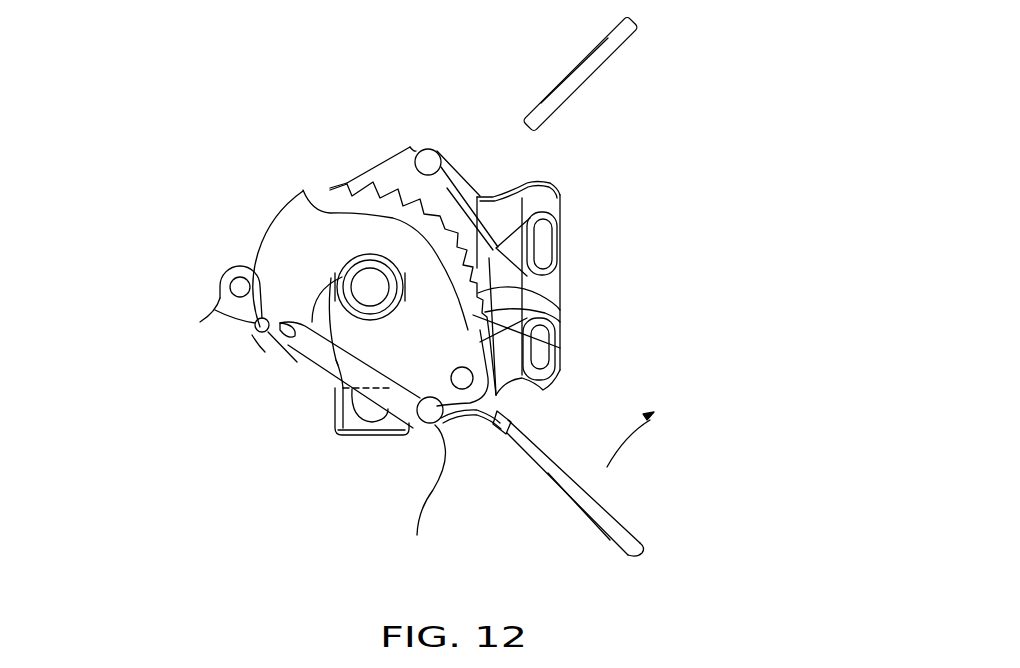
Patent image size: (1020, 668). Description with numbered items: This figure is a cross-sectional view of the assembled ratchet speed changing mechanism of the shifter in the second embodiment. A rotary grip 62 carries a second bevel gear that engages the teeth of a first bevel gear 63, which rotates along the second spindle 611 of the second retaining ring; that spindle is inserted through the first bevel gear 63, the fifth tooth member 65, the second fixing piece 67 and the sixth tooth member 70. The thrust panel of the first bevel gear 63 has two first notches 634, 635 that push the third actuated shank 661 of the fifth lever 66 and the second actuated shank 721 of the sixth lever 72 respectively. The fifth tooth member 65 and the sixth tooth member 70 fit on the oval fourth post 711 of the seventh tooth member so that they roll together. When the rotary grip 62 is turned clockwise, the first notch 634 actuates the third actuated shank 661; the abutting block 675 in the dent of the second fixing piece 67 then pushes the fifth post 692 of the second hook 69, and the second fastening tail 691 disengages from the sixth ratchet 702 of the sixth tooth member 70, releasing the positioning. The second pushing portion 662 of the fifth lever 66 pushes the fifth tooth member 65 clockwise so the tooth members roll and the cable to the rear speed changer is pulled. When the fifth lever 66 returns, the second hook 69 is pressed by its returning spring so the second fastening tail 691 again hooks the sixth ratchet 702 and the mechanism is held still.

The rotary grip 62 is at (562, 293).
The first bevel gear 63 is at (377, 167).
The first notch 634 is at (440, 421).
The first notch 635 is at (420, 152).
The fifth tooth member 65 is at (553, 323).
The fifth lever 66 is at (603, 507).
The third actuated shank 661 is at (424, 502).
The second pushing portion 662 is at (555, 340).
The second fixing piece 67 is at (260, 248).
The second hook 69 is at (218, 286).
The abutting block 675 is at (215, 310).
The second fastening tail 691 is at (257, 336).
The fifth post 692 is at (255, 322).
The sixth tooth member 70 is at (293, 222).
The sixth ratchet 702 is at (322, 380).
The oval fourth post 711 is at (320, 370).
The second spindle 611 is at (323, 370).
The second actuated shank 721 is at (428, 149).
The sixth lever 72 is at (577, 92).